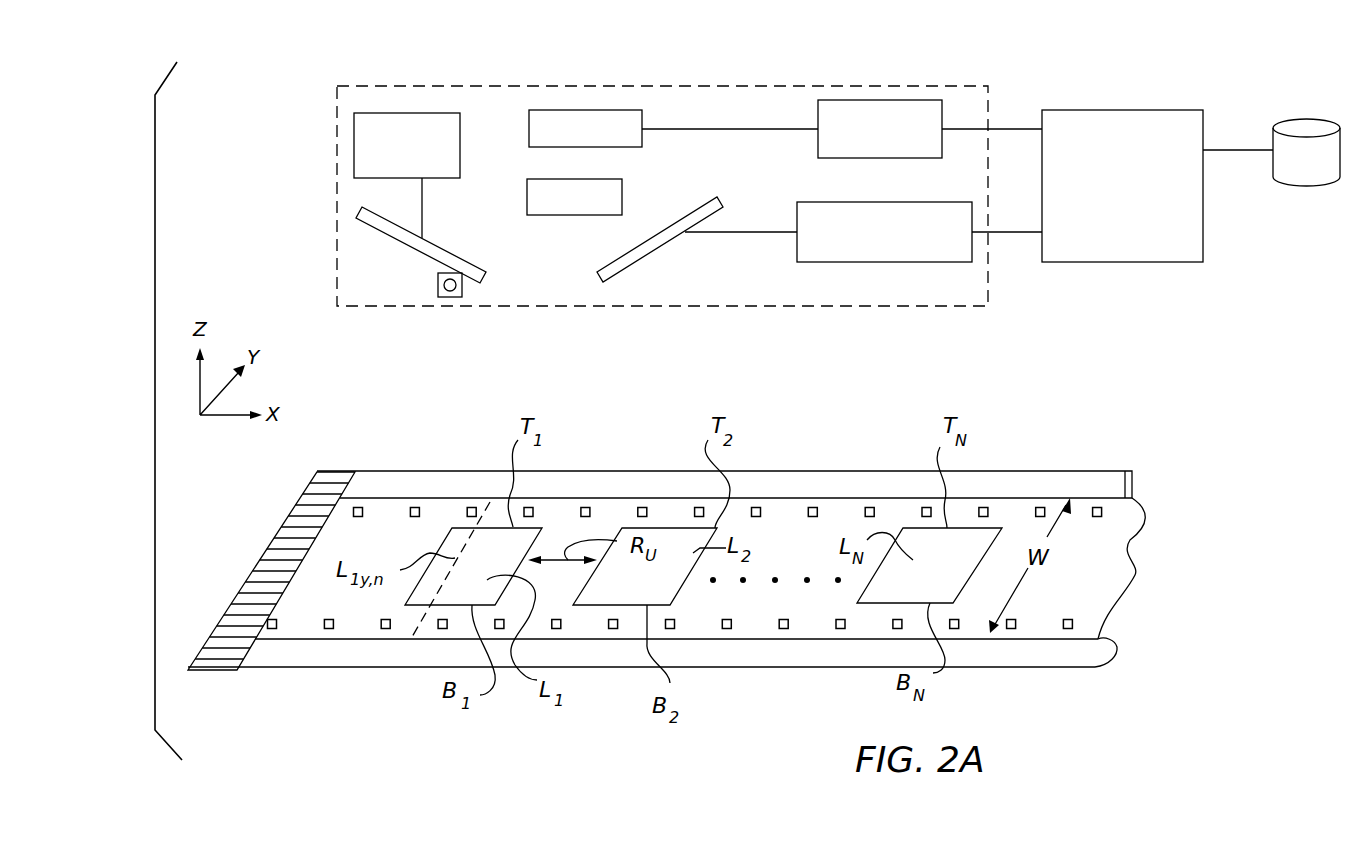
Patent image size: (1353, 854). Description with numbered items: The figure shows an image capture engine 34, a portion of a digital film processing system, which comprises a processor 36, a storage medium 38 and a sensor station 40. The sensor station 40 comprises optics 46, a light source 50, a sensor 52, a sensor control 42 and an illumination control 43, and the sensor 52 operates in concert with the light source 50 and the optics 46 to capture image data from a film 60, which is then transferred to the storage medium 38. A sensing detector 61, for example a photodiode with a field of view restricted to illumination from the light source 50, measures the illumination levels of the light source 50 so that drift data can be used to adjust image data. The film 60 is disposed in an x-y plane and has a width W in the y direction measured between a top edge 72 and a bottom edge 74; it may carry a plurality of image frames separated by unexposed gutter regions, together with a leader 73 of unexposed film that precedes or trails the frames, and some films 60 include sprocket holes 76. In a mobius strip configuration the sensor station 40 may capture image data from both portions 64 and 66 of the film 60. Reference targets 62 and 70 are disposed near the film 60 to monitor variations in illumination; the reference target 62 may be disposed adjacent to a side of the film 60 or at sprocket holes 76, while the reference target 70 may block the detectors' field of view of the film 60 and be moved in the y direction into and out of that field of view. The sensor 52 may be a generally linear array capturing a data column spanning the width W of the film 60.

The image capture engine 34 is at (1224, 425).
The processor 36 is at (1129, 110).
The storage medium 38 is at (1305, 118).
The sensor station 40 is at (336, 88).
The sensor control 42 is at (912, 100).
The illumination control 43 is at (878, 262).
The optics 46 is at (622, 196).
The light source 50 is at (460, 120).
The sensor 52 is at (623, 110).
The film 60 is at (385, 535).
The sensing detector 61 is at (438, 291).
The reference target 62 is at (450, 485).
The portion 64 is at (622, 502).
The portion 66 is at (594, 744).
The reference target 70 is at (305, 510).
The top edge 72 is at (1115, 495).
The leader 73 is at (557, 518).
The bottom edge 74 is at (1117, 647).
The sprocket holes 76 is at (477, 508).